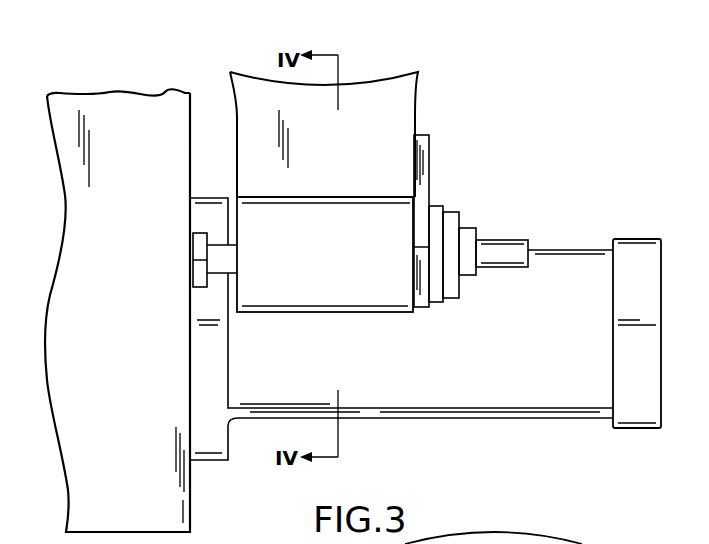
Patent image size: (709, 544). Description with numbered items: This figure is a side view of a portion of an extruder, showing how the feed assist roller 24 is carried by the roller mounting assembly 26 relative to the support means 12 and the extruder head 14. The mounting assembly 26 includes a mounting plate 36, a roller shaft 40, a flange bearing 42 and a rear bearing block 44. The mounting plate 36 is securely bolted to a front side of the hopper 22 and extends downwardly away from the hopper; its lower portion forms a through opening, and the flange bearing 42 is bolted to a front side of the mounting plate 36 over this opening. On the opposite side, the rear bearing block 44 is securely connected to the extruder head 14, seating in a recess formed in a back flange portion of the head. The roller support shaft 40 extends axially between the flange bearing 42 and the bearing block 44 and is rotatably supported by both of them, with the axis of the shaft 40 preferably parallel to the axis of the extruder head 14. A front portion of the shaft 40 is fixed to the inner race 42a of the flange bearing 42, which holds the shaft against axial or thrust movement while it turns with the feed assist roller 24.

The support means 12 is at (137, 518).
The extruder head 14 is at (562, 409).
The hopper 22 is at (367, 100).
The feed assist roller 24 is at (343, 257).
The roller mounting assembly 26 is at (445, 238).
The mounting plate 36 is at (422, 167).
The roller shaft 40 is at (508, 238).
The flange bearing 42 is at (444, 310).
The inner race 42a is at (468, 278).
The bearing block 44 is at (193, 243).